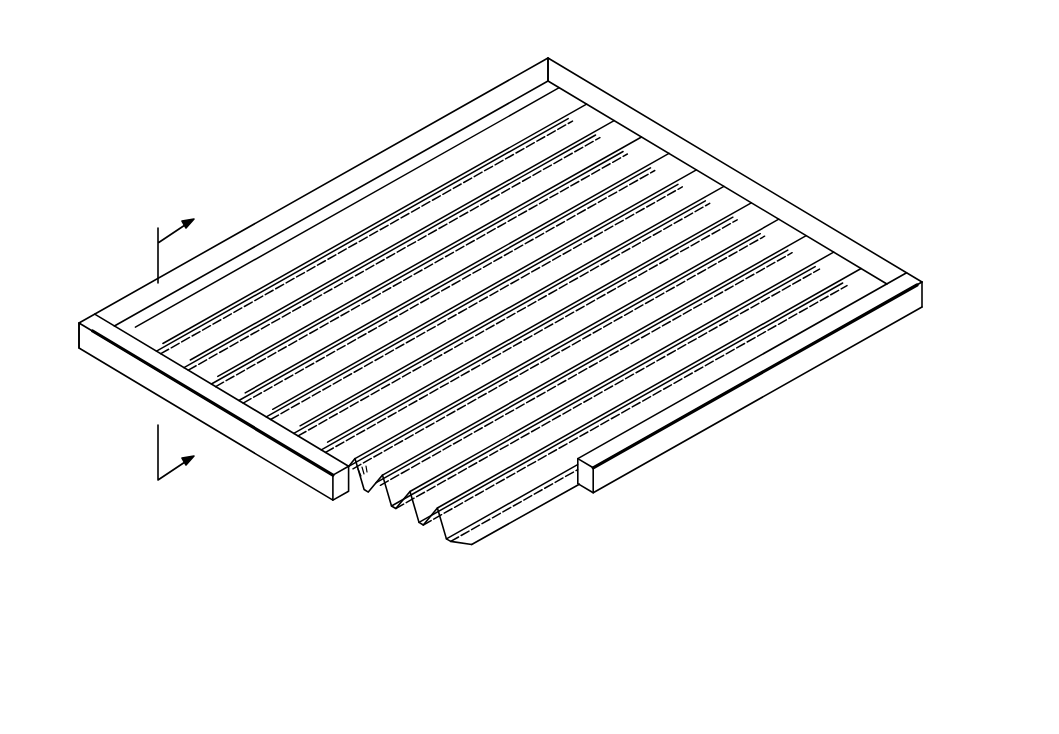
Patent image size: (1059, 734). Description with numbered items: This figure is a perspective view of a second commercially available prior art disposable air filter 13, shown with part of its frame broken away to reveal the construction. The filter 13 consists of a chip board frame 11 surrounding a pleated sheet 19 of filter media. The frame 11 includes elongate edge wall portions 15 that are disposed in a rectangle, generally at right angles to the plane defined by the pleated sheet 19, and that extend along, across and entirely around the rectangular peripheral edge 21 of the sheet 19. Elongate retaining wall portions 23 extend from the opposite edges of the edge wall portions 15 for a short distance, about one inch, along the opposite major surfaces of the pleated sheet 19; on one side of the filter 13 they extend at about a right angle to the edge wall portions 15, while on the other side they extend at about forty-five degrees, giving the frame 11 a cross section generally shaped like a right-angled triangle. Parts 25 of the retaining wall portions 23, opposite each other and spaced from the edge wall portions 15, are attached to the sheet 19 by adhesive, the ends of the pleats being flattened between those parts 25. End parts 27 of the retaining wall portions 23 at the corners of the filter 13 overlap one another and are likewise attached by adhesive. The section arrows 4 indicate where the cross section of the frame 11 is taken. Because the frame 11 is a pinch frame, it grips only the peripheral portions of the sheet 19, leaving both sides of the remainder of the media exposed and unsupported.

The prior art disposable air filter 13 is at (727, 42).
The chip board frame 11 is at (675, 123).
The end parts of the retaining wall portions 27 is at (547, 80).
The edge wall portions 15 is at (255, 455).
The pleated sheet of filter media 19 is at (512, 523).
The parts of the retaining wall portions 25 is at (354, 205).
The retaining wall portions 23 is at (792, 214).
The rectangular peripheral edge 21 is at (466, 543).
The section line 4- 4 is at (158, 362).